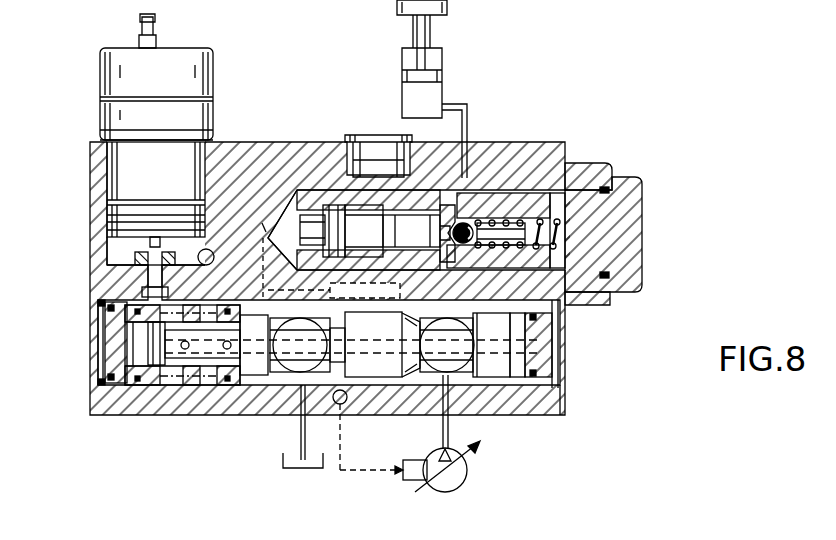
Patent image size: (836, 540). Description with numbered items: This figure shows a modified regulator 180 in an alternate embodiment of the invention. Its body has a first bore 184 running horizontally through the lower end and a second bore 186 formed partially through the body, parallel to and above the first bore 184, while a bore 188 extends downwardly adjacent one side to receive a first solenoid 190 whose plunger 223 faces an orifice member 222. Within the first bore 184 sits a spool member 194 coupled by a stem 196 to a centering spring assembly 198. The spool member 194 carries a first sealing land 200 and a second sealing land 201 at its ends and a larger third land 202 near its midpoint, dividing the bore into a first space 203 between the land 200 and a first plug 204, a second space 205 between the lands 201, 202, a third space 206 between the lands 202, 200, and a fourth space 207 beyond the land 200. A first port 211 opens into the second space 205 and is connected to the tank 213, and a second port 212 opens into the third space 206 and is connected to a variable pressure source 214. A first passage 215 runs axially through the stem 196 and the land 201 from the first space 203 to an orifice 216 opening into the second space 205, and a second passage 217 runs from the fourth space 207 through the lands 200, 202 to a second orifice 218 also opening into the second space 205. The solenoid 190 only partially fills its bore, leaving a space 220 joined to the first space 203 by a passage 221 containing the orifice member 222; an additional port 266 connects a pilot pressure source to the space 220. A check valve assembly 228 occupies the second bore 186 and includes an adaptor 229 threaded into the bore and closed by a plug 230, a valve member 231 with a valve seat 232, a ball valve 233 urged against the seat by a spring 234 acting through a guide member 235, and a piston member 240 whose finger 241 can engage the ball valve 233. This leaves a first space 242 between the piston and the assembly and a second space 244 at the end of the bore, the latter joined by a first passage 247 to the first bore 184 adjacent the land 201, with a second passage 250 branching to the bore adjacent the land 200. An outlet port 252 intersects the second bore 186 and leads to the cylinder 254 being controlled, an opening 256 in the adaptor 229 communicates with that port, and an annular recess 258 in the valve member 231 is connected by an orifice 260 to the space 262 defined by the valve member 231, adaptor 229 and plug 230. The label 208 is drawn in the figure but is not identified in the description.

The regulator 180 is at (305, 63).
The first bore 184 is at (258, 395).
The second bore 186 is at (515, 193).
The bore 188 is at (212, 128).
The first solenoid 190 is at (206, 118).
The spool member 194 is at (404, 378).
The stem 196 is at (193, 360).
The centering spring assembly 198 is at (168, 390).
The first sealing land 200 is at (483, 395).
The second sealing land 201 is at (235, 388).
The third land 202 is at (350, 398).
The first space 203 is at (110, 372).
The first plug 204 is at (100, 353).
The second space 205 is at (300, 418).
The third space 206 is at (482, 380).
The fourth space 207 is at (518, 343).
The main spool 208 is at (373, 344).
The first port 211 is at (298, 375).
The second port 212 is at (442, 380).
The tank 213 is at (291, 472).
The variable pressure source 214 is at (452, 490).
The first passage 215 is at (125, 420).
The orifice 216 is at (235, 318).
The second passage 217 is at (565, 393).
The second orifice 218 is at (352, 358).
The space 220 is at (115, 245).
The passage 221 is at (100, 317).
The orifice member 222 is at (127, 258).
The plunger 223 is at (180, 237).
The check valve assembly 228 is at (624, 127).
The adaptor 229 is at (608, 163).
The plug 230 is at (643, 243).
The valve member 231 is at (600, 208).
The valve seat 232 is at (401, 147).
The ball valve 233 is at (470, 222).
The spring 234 is at (597, 305).
The guide member 235 is at (608, 234).
The piston member 240 is at (350, 207).
The finger 241 is at (412, 225).
The first space 242 is at (355, 195).
The second space 244 is at (265, 225).
The first passage 247 is at (268, 262).
The second passage 250 is at (500, 375).
The outlet port 252 is at (455, 178).
The cylinder 254 is at (402, 90).
The opening 256 is at (478, 205).
The annular recess 258 is at (545, 205).
The orifice 260 is at (600, 198).
The space 262 is at (612, 265).
The port 266 is at (208, 249).